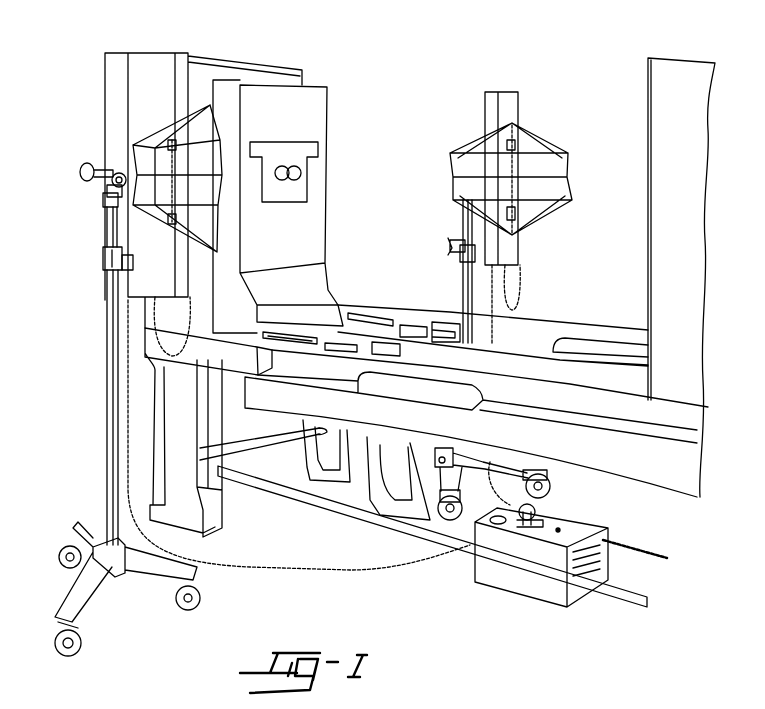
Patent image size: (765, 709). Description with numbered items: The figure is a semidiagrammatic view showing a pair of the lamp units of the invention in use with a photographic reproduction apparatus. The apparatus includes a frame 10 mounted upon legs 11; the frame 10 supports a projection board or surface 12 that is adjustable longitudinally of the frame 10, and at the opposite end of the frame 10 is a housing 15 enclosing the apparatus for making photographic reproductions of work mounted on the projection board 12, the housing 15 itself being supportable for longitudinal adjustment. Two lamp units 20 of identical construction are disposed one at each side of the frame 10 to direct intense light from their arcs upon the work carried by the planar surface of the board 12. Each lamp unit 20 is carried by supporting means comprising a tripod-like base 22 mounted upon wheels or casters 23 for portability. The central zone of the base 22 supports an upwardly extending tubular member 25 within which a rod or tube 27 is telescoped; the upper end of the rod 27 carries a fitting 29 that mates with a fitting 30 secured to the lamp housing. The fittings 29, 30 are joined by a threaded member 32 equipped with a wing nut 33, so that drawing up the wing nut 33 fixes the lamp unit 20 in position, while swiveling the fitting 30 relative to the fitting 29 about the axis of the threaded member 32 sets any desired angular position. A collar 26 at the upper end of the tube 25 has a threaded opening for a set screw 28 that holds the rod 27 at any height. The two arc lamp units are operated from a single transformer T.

The frame 10 is at (618, 480).
The legs 11 is at (212, 503).
The projection board 12 is at (653, 105).
The housing 15 is at (334, 131).
The lamp unit 20 is at (160, 117).
The tripod-like base 22 is at (113, 585).
The casters 23 is at (83, 652).
The tubular member 25 is at (110, 308).
The collar 26 is at (102, 258).
The rod 27 is at (108, 232).
The set screw 28 is at (107, 282).
The fitting 29 is at (103, 205).
The fitting 30 is at (113, 172).
The threaded member 32 is at (108, 183).
The wing nut 33 is at (104, 196).
The transformer T is at (523, 600).